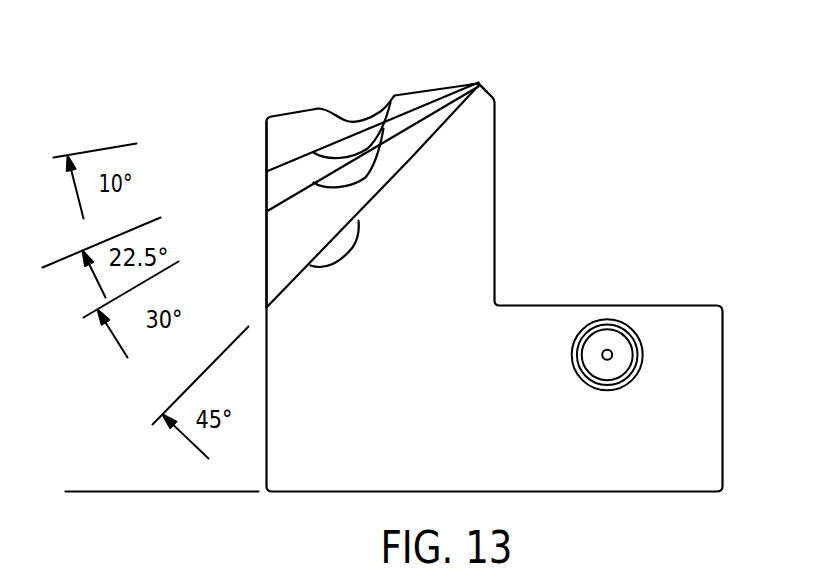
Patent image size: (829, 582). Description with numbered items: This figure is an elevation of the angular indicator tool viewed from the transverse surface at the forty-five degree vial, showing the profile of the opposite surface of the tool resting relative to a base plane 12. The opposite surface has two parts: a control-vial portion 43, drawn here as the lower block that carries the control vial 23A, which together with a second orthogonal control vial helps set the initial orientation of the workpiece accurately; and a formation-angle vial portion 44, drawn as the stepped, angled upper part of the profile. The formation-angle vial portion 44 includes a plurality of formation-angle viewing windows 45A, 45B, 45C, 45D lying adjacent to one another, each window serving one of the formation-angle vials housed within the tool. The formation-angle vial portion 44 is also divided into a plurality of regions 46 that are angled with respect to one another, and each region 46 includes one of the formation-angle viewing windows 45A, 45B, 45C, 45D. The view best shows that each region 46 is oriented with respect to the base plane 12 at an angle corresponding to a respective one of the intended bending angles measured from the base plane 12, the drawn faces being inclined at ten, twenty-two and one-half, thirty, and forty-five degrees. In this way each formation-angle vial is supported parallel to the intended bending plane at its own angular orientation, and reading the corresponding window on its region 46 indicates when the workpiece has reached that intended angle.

The base plane 12 is at (97, 491).
The control vial 23A is at (623, 360).
The control-vial portion 43 is at (642, 305).
The formation-angle vial portion 44 is at (457, 83).
The formation-angle viewing window 45A is at (352, 116).
The formation-angle viewing window 45B is at (362, 148).
The formation-angle viewing window 45C is at (355, 178).
The formation-angle viewing window 45D is at (342, 253).
The region 46 is at (290, 282).